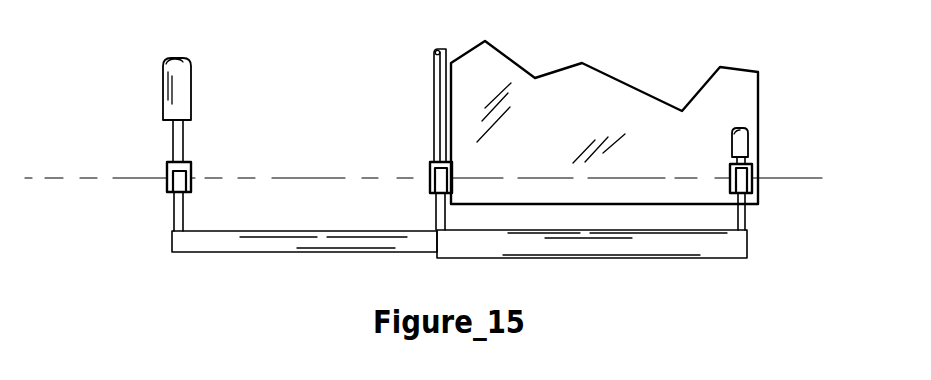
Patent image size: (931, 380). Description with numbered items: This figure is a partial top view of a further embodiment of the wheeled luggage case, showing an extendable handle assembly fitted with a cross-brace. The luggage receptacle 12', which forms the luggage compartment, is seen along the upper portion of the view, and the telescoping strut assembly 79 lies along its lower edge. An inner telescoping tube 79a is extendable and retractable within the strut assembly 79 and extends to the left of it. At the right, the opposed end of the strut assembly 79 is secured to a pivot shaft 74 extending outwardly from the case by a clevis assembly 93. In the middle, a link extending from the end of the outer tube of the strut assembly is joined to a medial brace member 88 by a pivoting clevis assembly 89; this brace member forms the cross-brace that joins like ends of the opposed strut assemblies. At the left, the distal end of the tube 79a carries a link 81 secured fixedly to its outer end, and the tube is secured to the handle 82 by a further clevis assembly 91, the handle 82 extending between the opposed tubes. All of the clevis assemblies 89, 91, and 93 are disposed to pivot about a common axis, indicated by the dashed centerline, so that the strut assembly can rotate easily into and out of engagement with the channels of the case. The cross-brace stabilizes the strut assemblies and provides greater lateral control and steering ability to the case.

The luggage receptacle 12' is at (604, 122).
The pivot shaft 74 is at (730, 157).
The telescoping strut assembly 79 is at (592, 275).
The inner telescoping tube 79a is at (248, 242).
The link 81 is at (176, 207).
The handle 82 is at (185, 83).
The medial brace member 88 is at (433, 133).
The pivoting clevis assembly 89 is at (430, 176).
The clevis assembly 91 is at (168, 168).
The clevis assembly 93 is at (753, 187).